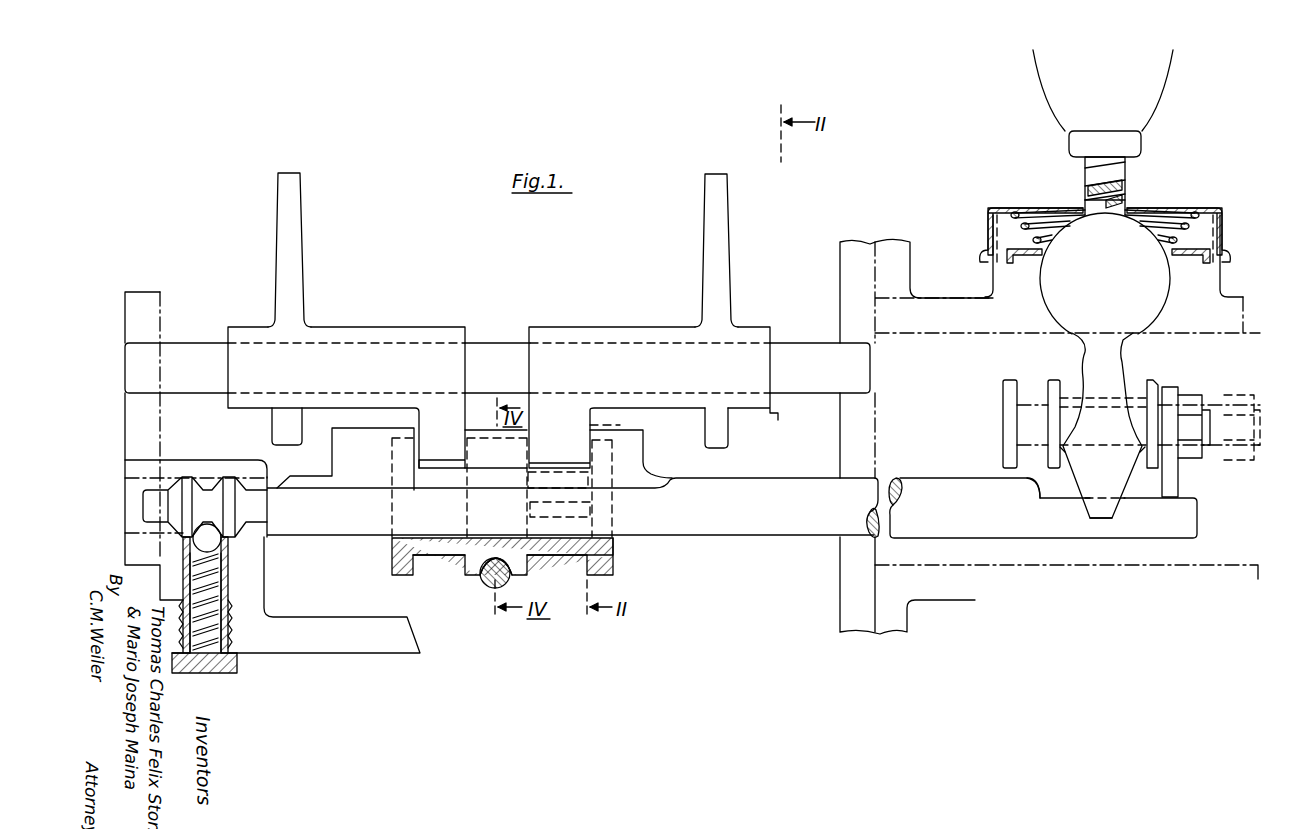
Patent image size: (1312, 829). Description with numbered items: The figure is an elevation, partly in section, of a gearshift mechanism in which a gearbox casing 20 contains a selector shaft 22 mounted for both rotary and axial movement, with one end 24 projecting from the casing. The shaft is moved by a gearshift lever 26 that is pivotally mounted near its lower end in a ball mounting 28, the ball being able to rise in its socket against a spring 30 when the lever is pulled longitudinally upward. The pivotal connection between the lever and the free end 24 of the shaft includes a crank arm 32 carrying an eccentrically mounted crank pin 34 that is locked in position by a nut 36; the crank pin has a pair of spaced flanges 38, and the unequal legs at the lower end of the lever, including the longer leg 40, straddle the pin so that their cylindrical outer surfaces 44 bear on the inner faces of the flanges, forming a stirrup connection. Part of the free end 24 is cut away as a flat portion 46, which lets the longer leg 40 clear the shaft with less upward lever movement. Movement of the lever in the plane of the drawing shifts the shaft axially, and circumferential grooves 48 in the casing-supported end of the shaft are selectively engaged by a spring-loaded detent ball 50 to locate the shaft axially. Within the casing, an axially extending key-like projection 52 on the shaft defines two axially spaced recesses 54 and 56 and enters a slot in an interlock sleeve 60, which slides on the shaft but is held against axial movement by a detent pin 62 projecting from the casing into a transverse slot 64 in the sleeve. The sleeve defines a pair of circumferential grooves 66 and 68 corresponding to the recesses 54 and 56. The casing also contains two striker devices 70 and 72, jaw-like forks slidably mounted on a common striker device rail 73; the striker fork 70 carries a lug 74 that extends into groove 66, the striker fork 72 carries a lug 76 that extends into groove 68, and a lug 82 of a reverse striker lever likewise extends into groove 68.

The gearbox casing 20 is at (857, 606).
The selector shaft 22 is at (693, 528).
The free end of the selector shaft 24 is at (957, 490).
The gearshift lever 26 is at (1115, 180).
The ball mounting 28 is at (1152, 281).
The spring 30 is at (1032, 213).
The crank arm 32 is at (1172, 395).
The crank pin 34 is at (1077, 405).
The nut 36 is at (1192, 430).
The spaced flanges 38 is at (1053, 395).
The longer leg 40 is at (1113, 512).
The cylindrical outer surfaces 44 is at (1143, 450).
The flat portion 46 is at (1053, 497).
The circumferential grooves 48 is at (207, 492).
The spring-loaded detent ball 50 is at (215, 546).
The axially extending key-like projection 52 is at (372, 440).
The recess 54 is at (455, 447).
The recess 56 is at (533, 448).
The interlock sleeve 60 is at (395, 562).
The detent pin 62 is at (488, 588).
The transverse slot 64 is at (481, 566).
The circumferential groove 66 is at (440, 566).
The circumferential groove 68 is at (543, 566).
The striker device 70 is at (283, 200).
The striker device 72 is at (707, 200).
The striker device rail 73 is at (172, 356).
The lug 74 is at (445, 450).
The lug 76 is at (573, 482).
The lug 82 is at (615, 548).